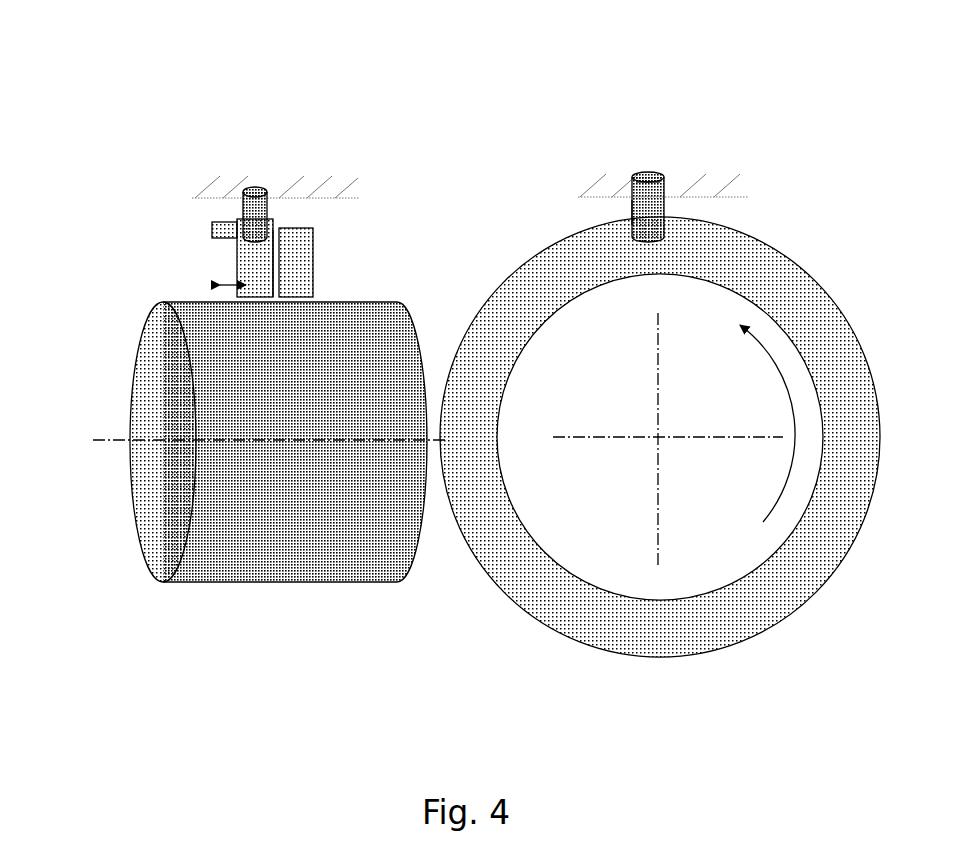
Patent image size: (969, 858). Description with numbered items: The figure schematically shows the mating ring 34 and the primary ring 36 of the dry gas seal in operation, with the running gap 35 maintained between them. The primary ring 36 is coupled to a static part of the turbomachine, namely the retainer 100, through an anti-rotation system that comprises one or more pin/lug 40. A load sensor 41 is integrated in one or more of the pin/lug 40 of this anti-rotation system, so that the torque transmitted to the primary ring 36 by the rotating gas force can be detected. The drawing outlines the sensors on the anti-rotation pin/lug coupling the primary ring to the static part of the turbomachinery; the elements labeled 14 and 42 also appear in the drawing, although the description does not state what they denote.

The drum 14 is at (158, 535).
The mating ring 34 is at (299, 240).
The running gap 35 is at (268, 272).
The primary ring 36 is at (251, 254).
The pin/lug 40 is at (653, 190).
The load sensor 41 is at (257, 203).
The stop 42 is at (211, 230).
The retainer 100 is at (737, 178).